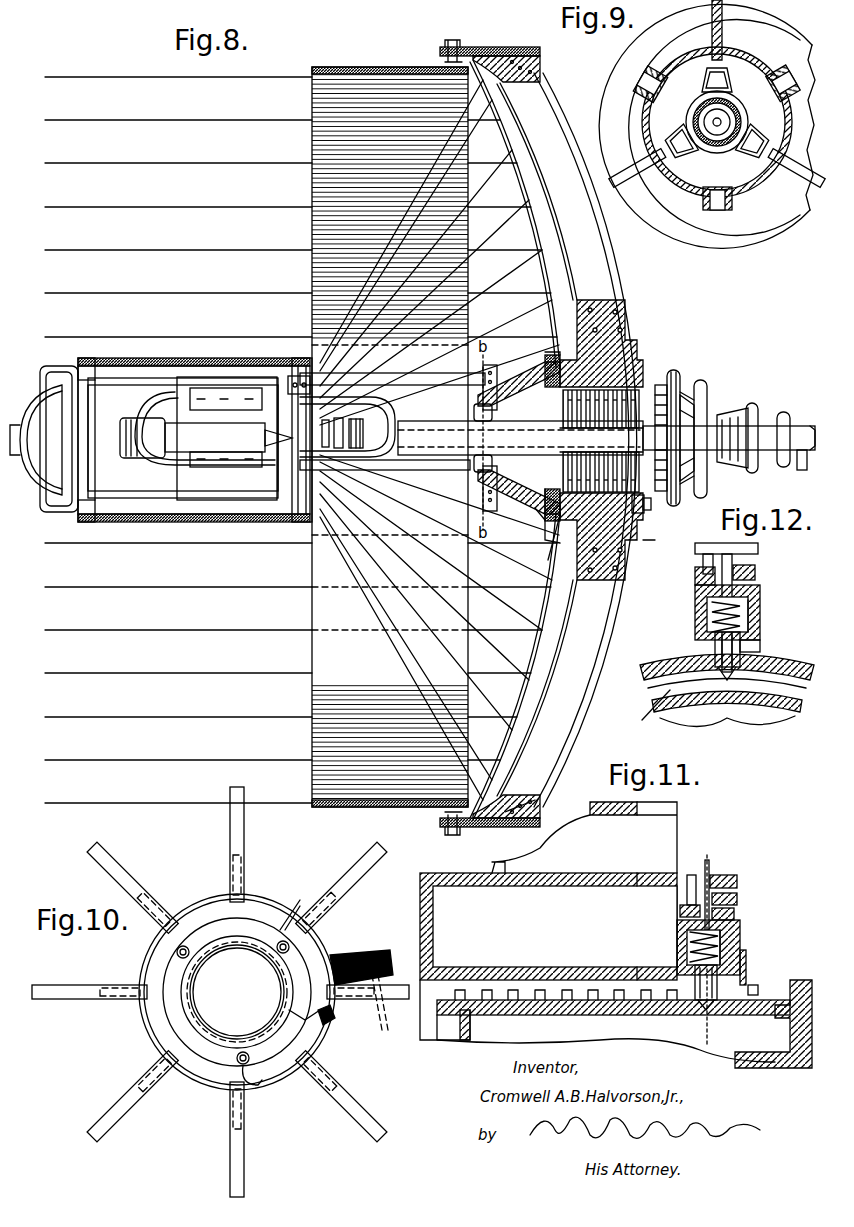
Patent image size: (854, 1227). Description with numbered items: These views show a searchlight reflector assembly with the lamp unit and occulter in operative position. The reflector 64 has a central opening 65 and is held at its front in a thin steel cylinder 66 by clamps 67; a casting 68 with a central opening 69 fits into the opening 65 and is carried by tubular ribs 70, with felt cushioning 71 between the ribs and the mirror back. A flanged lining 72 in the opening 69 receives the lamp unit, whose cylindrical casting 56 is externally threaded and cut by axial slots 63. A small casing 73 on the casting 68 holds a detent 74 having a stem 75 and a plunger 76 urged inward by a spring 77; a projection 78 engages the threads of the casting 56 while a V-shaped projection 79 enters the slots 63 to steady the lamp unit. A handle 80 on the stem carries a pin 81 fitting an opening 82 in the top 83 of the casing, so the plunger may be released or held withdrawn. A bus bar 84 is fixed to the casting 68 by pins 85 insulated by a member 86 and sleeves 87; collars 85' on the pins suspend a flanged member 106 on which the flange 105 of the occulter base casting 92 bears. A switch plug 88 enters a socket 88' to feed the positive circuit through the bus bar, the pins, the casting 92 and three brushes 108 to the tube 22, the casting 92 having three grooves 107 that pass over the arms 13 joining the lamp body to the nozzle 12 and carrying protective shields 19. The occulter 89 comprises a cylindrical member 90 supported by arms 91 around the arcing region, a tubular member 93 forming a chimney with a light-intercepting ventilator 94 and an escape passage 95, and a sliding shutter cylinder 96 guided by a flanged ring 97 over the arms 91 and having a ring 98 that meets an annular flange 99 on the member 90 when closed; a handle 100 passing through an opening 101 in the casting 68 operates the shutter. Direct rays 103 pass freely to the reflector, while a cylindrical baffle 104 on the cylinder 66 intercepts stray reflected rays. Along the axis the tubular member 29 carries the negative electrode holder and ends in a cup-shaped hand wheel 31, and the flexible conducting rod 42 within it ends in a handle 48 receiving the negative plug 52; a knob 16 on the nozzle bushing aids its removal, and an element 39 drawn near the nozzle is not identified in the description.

In FIG. 8, the nozzle 12 is at (160, 415).
In FIG. 8, the arms 13 is at (372, 400).
In FIG. 8, the knob 16 is at (124, 430).
In FIG. 8, the protective shields 19 is at (212, 390).
In FIG. 8, the tube 22 is at (448, 422).
In FIG. 9, the tube 22 is at (668, 112).
In FIG. 9, the tubular member 29 is at (735, 112).
In FIG. 8, the cup-shaped hand wheel 31 is at (736, 414).
In FIG. 8, the filament 39 is at (272, 436).
In FIG. 9, the flexible rod 42 is at (714, 120).
In FIG. 8, the handle 48 is at (784, 412).
In FIG. 8, the plug 52 is at (800, 470).
In FIG. 12, the cylindrical casting 56 is at (722, 711).
In FIG. 11, the cylindrical casting 56 is at (618, 1015).
In FIG. 8, the slots 63 is at (566, 436).
In FIG. 8, the reflector 64 is at (548, 604).
In FIG. 8, the central opening 65 is at (555, 358).
In FIG. 8, the metal cylinder 66 is at (472, 830).
In FIG. 8, the clamps 67 is at (438, 50).
In FIG. 8, the casting 68 is at (628, 315).
In FIG. 11, the casting 68 is at (553, 967).
In FIG. 10, the casting 68 is at (262, 900).
In FIG. 8, the central opening 69 is at (546, 505).
In FIG. 11, the central opening 69 is at (425, 1022).
In FIG. 10, the central opening 69 is at (237, 992).
In FIG. 8, the ribs 70 is at (567, 440).
In FIG. 10, the ribs 70 is at (240, 832).
In FIG. 8, the cushioning material 71 is at (508, 798).
In FIG. 8, the flanged lining 72 is at (655, 384).
In FIG. 12, the flanged lining 72 is at (668, 655).
In FIG. 11, the flanged lining 72 is at (748, 972).
In FIG. 10, the flanged lining 72 is at (224, 1038).
In FIG. 12, the casing 73 is at (761, 624).
In FIG. 11, the casing 73 is at (741, 933).
In FIG. 12, the detent 74 is at (750, 620).
In FIG. 11, the detent 74 is at (725, 950).
In FIG. 12, the stem 75 is at (757, 565).
In FIG. 11, the stem 75 is at (738, 893).
In FIG. 12, the plunger 76 is at (715, 642).
In FIG. 11, the plunger 76 is at (695, 990).
In FIG. 12, the spring 77 is at (707, 610).
In FIG. 11, the spring 77 is at (686, 950).
In FIG. 12, the projection 78 is at (728, 680).
In FIG. 11, the projection 78 is at (714, 1003).
In FIG. 12, the V-shaped projection 79 is at (762, 642).
In FIG. 11, the V-shaped projection 79 is at (760, 990).
In FIG. 12, the handle 80 is at (760, 548).
In FIG. 11, the handle 80 is at (730, 875).
In FIG. 12, the pin 81 is at (702, 562).
In FIG. 11, the pin 81 is at (686, 892).
In FIG. 12, the opening 82 is at (694, 582).
In FIG. 11, the opening 82 is at (679, 908).
In FIG. 11, the top 83 is at (735, 911).
In FIG. 8, the bus bar 84 is at (642, 525).
In FIG. 10, the bus bar 84 is at (290, 944).
In FIG. 8, the pins 85 is at (671, 510).
In FIG. 10, the pins 85 is at (265, 1008).
In FIG. 8, the collars 85' is at (525, 532).
In FIG. 8, the insulating member 86 is at (655, 544).
In FIG. 8, the insulating sleeves 87 is at (549, 537).
In FIG. 10, the switch plug 88 is at (361, 955).
In FIG. 8, the socket 88' is at (704, 421).
In FIG. 10, the socket 88' is at (363, 1002).
In FIG. 8, the occulter 89 is at (227, 418).
In FIG. 8, the cylindrical member 90 is at (228, 500).
In FIG. 8, the arms 91 is at (440, 380).
In FIG. 8, the cylindrical casting 92 is at (520, 388).
In FIG. 9, the cylindrical casting 92 is at (680, 56).
In FIG. 8, the tubular member 93 is at (140, 522).
In FIG. 8, the ventilator 94 is at (36, 440).
In FIG. 8, the passage 95 is at (56, 368).
In FIG. 8, the shutter 96 is at (140, 358).
In FIG. 8, the internal flanged ring 97 is at (300, 374).
In FIG. 8, the internal flanged ring 98 is at (90, 358).
In FIG. 8, the annular flange 99 is at (292, 522).
In FIG. 10, the handle 100 is at (326, 1028).
In FIG. 10, the opening 101 is at (290, 1012).
In FIG. 8, the broken lines 103 is at (400, 606).
In FIG. 8, the baffle 104 is at (340, 60).
In FIG. 8, the flange 105 is at (528, 372).
In FIG. 8, the flanged member 106 is at (548, 350).
In FIG. 9, the grooves 107 is at (652, 82).
In FIG. 8, the electrical brushes 108 is at (479, 422).
In FIG. 9, the electrical brushes 108 is at (742, 75).